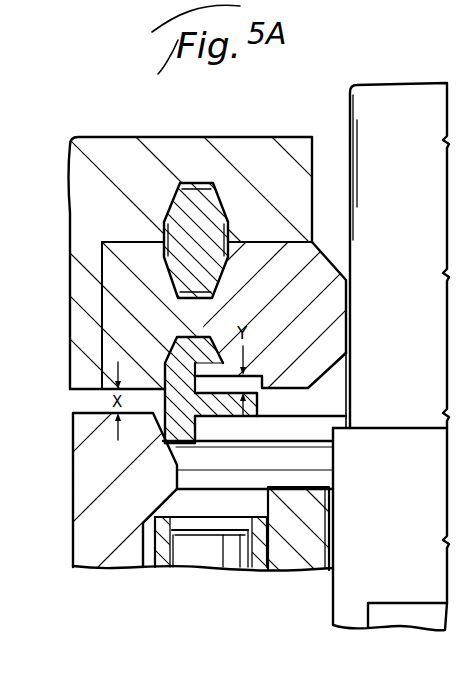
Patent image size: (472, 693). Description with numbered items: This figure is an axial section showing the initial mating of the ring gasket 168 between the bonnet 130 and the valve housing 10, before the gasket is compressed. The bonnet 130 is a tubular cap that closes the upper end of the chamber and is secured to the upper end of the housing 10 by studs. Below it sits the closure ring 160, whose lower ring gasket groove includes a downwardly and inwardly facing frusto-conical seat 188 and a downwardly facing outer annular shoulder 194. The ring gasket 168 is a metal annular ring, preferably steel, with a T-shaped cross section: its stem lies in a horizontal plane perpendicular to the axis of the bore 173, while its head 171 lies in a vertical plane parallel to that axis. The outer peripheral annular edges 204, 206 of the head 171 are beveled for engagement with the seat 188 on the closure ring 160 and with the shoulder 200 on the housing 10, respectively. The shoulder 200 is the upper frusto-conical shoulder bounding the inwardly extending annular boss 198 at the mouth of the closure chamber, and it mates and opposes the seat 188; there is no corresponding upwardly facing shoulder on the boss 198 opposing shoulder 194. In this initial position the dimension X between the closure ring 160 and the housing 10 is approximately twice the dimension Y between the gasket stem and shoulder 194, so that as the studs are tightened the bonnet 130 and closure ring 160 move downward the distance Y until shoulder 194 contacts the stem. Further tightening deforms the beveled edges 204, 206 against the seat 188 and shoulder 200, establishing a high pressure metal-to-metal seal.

The housing 10 is at (97, 537).
The bonnet 130 is at (113, 147).
The closure ring 160 is at (120, 258).
The ring gasket 168 is at (153, 370).
The head 171 is at (166, 424).
The bore 173 is at (256, 404).
The frusto-conical seat 188 is at (163, 332).
The outer annular shoulder 194 is at (263, 372).
The annular boss 198 is at (165, 480).
The upper frusto-conical shoulder 200 is at (170, 457).
The beveled outer peripheral edge 204 is at (160, 358).
The beveled outer peripheral edge 206 is at (168, 446).